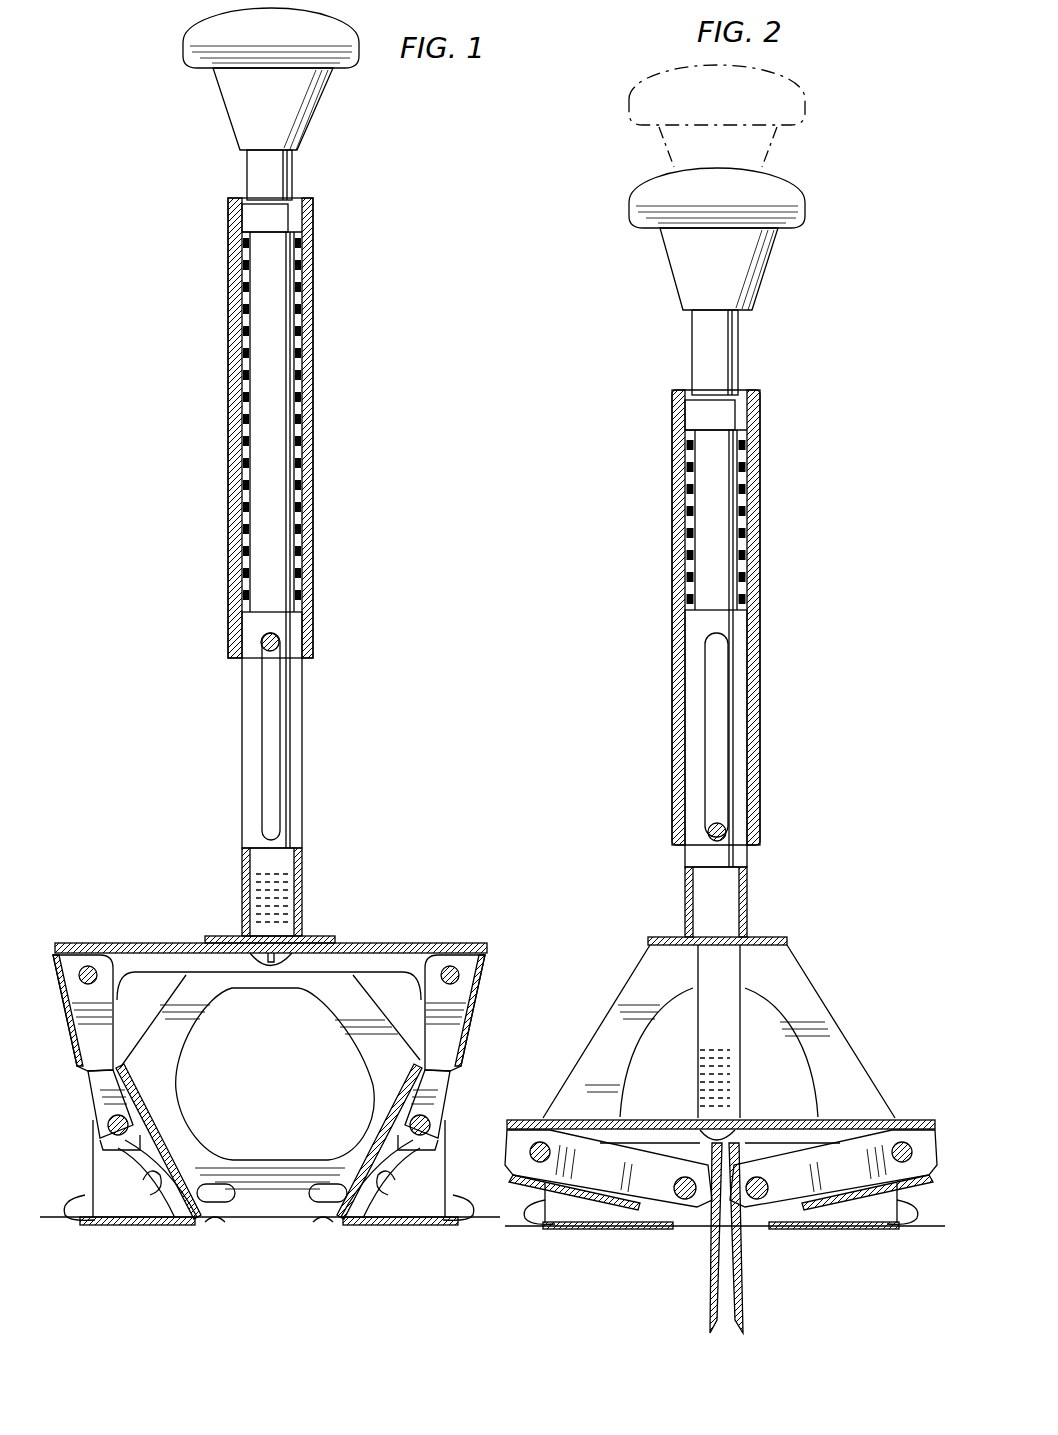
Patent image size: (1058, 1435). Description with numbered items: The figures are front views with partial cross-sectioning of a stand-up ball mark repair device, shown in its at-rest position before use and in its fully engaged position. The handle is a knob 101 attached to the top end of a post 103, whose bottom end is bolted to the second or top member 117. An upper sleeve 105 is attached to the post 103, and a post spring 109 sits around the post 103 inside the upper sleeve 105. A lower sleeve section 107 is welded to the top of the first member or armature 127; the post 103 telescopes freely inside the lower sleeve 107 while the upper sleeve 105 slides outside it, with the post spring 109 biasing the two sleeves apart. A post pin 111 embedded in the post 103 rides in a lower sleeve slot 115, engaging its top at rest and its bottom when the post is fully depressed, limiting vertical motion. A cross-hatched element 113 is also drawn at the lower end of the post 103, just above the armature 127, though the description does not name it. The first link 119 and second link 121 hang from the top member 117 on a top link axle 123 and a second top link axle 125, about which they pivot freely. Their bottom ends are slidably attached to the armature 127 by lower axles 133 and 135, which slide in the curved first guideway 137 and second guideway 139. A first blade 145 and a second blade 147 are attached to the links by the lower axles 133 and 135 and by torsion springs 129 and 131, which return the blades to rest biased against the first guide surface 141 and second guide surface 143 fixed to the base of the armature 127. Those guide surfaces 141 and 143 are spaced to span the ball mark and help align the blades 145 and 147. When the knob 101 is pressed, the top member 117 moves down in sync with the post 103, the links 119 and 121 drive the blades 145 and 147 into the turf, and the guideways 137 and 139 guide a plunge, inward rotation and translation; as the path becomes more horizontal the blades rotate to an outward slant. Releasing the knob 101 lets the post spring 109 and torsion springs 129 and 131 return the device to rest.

In FIG. 1, the knob 101 is at (352, 58).
In FIG. 2, the knob 101 is at (788, 126).
In FIG. 1, the post 103 is at (300, 190).
In FIG. 2, the post 103 is at (742, 382).
In FIG. 1, the upper sleeve 105 is at (313, 316).
In FIG. 2, the upper sleeve 105 is at (760, 455).
In FIG. 1, the lower sleeve section 107 is at (302, 762).
In FIG. 2, the lower sleeve section 107 is at (748, 880).
In FIG. 1, the post spring 109 is at (302, 376).
In FIG. 2, the post spring 109 is at (747, 510).
In FIG. 1, the post pin 111 is at (279, 640).
In FIG. 2, the post pin 111 is at (726, 830).
In FIG. 1, the cup 113 is at (292, 926).
In FIG. 2, the cup 113 is at (742, 1090).
In FIG. 1, the lower sleeve slot 115 is at (268, 800).
In FIG. 2, the lower sleeve slot 115 is at (722, 690).
In FIG. 1, the second or top member 117 is at (478, 947).
In FIG. 2, the second or top member 117 is at (920, 1120).
In FIG. 1, the first link 119 is at (90, 970).
In FIG. 2, the first link 119 is at (590, 1180).
In FIG. 1, the second link 121 is at (452, 1030).
In FIG. 2, the second link 121 is at (840, 1183).
In FIG. 1, the top link axle 123 is at (96, 968).
In FIG. 2, the top link axle 123 is at (552, 1148).
In FIG. 1, the second top link axle 125 is at (460, 972).
In FIG. 2, the second top link axle 125 is at (890, 1150).
In FIG. 1, the first member or armature 127 is at (216, 938).
In FIG. 2, the first member or armature 127 is at (782, 940).
In FIG. 1, the torsion spring 129 is at (142, 1102).
In FIG. 2, the torsion spring 129 is at (719, 1044).
In FIG. 1, the torsion spring 131 is at (420, 1093).
In FIG. 1, the lower axle 133 is at (108, 1133).
In FIG. 2, the lower axle 133 is at (683, 1203).
In FIG. 1, the lower axle 135 is at (430, 1130).
In FIG. 2, the lower axle 135 is at (765, 1203).
In FIG. 1, the first guideway 137 is at (140, 1226).
In FIG. 2, the first guideway 137 is at (590, 1118).
In FIG. 1, the second guideway 139 is at (390, 1226).
In FIG. 2, the second guideway 139 is at (845, 1112).
In FIG. 1, the first guide surface 141 is at (90, 1215).
In FIG. 2, the first guide surface 141 is at (533, 1226).
In FIG. 1, the second guide surface 143 is at (475, 1180).
In FIG. 2, the second guide surface 143 is at (920, 1230).
In FIG. 1, the first blade 145 is at (215, 1226).
In FIG. 2, the first blade 145 is at (703, 1312).
In FIG. 1, the second blade 147 is at (345, 1224).
In FIG. 2, the second blade 147 is at (753, 1310).